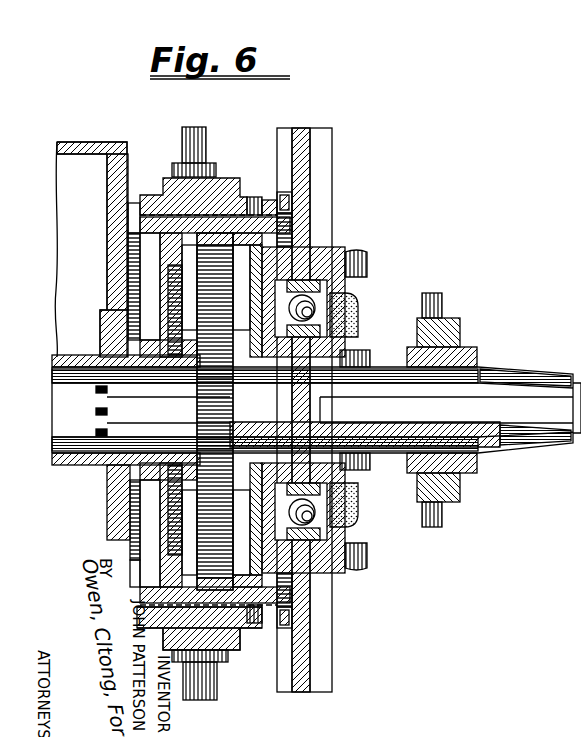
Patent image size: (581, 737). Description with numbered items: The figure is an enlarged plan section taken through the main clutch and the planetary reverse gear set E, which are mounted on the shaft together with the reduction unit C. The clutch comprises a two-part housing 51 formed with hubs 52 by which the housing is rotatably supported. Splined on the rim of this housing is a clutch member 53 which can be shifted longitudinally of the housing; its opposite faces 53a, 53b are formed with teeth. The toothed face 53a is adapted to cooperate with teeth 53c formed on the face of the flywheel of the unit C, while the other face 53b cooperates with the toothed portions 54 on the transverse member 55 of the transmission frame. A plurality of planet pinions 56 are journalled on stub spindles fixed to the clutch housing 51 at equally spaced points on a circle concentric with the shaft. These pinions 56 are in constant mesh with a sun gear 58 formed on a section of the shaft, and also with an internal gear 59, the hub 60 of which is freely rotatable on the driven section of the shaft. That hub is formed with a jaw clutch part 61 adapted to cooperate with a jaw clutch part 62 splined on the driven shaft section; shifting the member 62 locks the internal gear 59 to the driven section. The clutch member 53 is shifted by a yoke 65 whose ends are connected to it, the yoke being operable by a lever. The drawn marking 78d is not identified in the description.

The reduction unit C is at (68, 142).
The two-part housing 51 is at (167, 287).
The hubs 52 is at (137, 366).
The clutch member 53 is at (229, 190).
The toothed face 53a is at (135, 617).
The toothed face 53b is at (259, 383).
The teeth 53c is at (135, 209).
The toothed portions 54 is at (283, 203).
The transverse member 55 is at (307, 140).
The planet pinions 56 is at (205, 505).
The sun gear 58 is at (210, 402).
The internal gear 59 is at (222, 612).
The hub 60 is at (322, 440).
The jaw clutch part 61 is at (356, 358).
The jaw clutch part 62 is at (478, 360).
The yoke 65 is at (190, 662).
The bore passage 78d is at (446, 410).
The planetary reverse gear set E is at (203, 123).